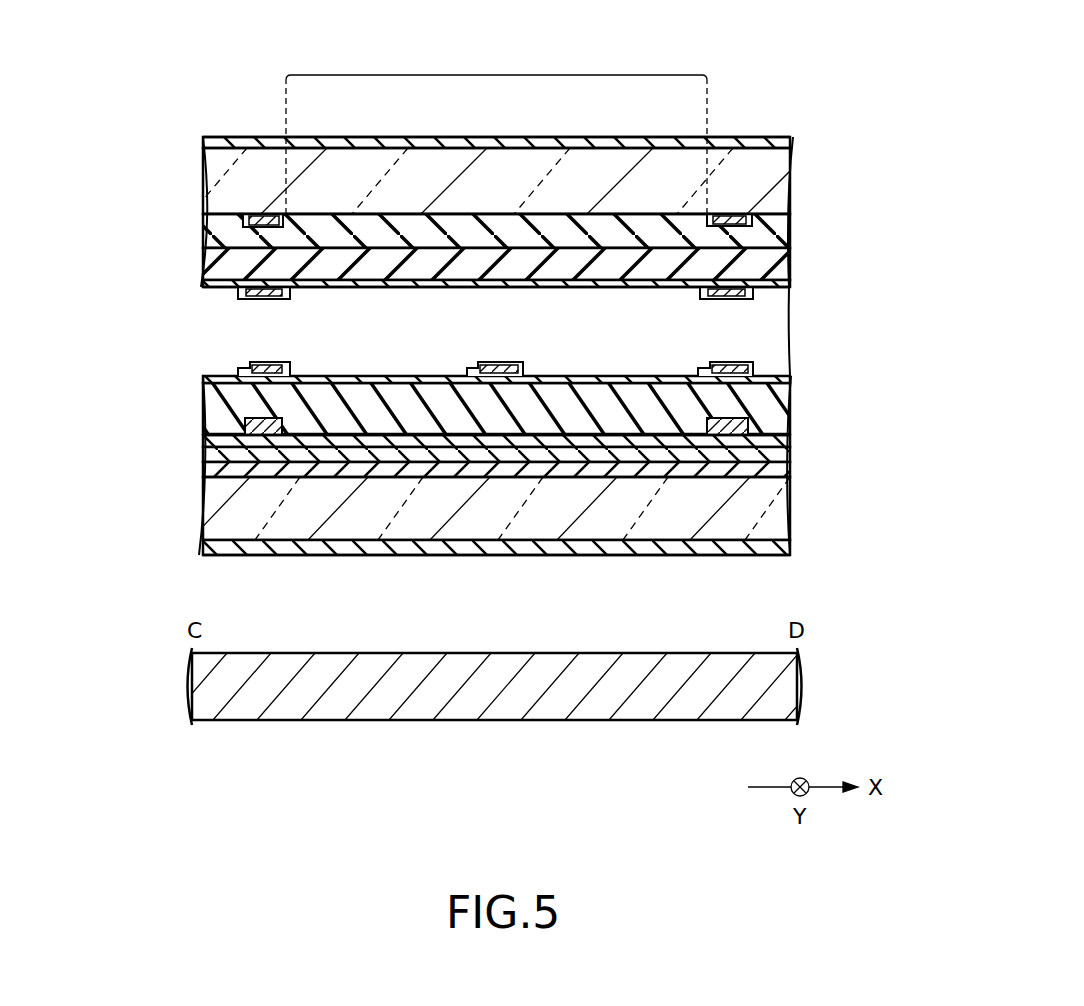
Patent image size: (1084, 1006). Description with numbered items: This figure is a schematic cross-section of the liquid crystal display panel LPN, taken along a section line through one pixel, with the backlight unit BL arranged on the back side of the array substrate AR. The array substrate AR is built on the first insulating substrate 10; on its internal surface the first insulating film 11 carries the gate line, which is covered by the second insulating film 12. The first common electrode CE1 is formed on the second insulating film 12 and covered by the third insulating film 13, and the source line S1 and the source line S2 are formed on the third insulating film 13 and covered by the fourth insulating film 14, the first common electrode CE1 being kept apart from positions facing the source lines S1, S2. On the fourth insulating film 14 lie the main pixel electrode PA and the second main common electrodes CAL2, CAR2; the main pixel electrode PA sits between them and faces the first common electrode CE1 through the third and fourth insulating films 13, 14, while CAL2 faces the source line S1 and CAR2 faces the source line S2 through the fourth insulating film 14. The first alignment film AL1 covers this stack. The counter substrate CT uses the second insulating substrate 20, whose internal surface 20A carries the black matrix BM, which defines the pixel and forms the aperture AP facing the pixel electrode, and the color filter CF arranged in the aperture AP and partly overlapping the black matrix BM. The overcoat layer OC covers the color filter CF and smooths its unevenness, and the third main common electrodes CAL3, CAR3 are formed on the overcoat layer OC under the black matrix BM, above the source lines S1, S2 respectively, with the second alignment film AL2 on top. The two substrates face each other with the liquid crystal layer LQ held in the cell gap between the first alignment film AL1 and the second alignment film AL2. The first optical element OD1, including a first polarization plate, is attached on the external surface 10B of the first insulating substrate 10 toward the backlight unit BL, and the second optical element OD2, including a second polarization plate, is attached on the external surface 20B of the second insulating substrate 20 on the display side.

The external surface 20B is at (226, 134).
The aperture AP is at (497, 75).
The liquid crystal display panel LPN is at (808, 116).
The second optical element OD2 is at (793, 142).
The second insulating substrate 20 is at (777, 167).
The counter substrate CT is at (200, 178).
The internal surface 20A is at (213, 225).
The black matrix BM is at (753, 223).
The color filter CF is at (787, 240).
The overcoat layer OC is at (775, 263).
The second alignment film AL2 is at (763, 287).
The third main common electrode CAL3 is at (253, 302).
The third main common electrode CAR3 is at (727, 302).
The second main common electrode CAL2 is at (250, 360).
The second main common electrode CAR2 is at (713, 372).
The main pixel electrode PA is at (488, 372).
The liquid crystal layer LQ is at (773, 342).
The first alignment film AL1 is at (778, 370).
The fourth insulating film 14 is at (778, 392).
The third insulating film 13 is at (787, 430).
The second insulating film 12 is at (787, 457).
The first insulating film 11 is at (787, 472).
The first insulating substrate 10 is at (778, 508).
The first optical element OD1 is at (788, 547).
The array substrate AR is at (190, 508).
The external surface 10B is at (221, 559).
The source line S1 is at (268, 438).
The first common electrode CE1 is at (547, 445).
The source line S2 is at (740, 438).
The backlight unit BL is at (790, 693).